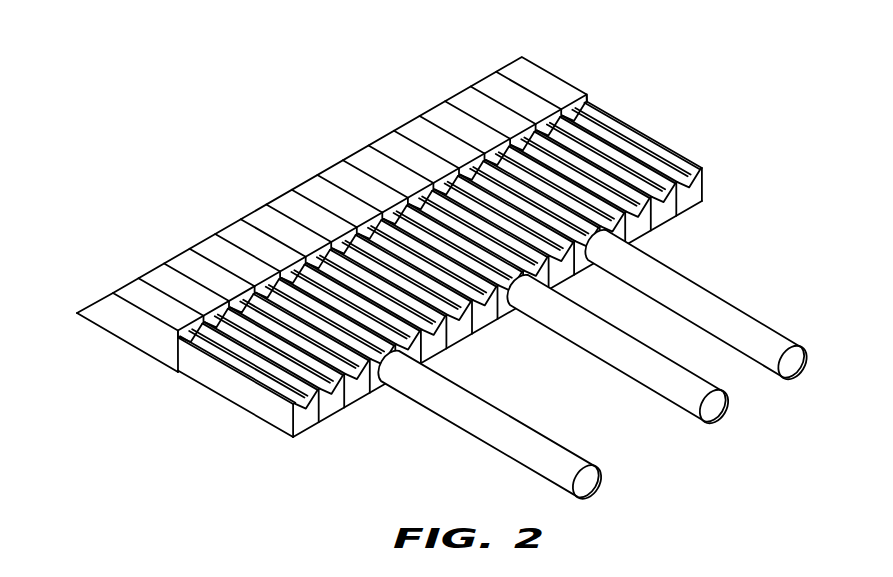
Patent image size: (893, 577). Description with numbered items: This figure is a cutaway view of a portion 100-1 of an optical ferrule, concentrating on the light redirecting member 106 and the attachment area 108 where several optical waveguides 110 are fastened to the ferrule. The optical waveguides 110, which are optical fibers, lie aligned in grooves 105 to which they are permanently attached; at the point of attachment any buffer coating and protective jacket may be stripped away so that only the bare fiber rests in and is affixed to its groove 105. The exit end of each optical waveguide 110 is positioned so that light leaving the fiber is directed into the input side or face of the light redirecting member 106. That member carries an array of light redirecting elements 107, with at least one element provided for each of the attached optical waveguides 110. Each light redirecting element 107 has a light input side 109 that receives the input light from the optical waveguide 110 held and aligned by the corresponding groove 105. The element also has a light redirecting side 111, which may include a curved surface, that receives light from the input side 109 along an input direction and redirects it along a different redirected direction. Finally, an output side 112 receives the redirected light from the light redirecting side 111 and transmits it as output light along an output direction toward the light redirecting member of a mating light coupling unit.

The portion of optical ferrule 100-1 is at (428, 256).
The grooves 105 is at (335, 395).
The light redirecting member 106 is at (310, 190).
The light redirecting elements 107 is at (280, 197).
The attachment area 108 is at (451, 294).
The light input side 109 is at (198, 340).
The optical waveguides 110 is at (790, 362).
The light redirecting side 111 is at (100, 304).
The output side 112 is at (105, 333).